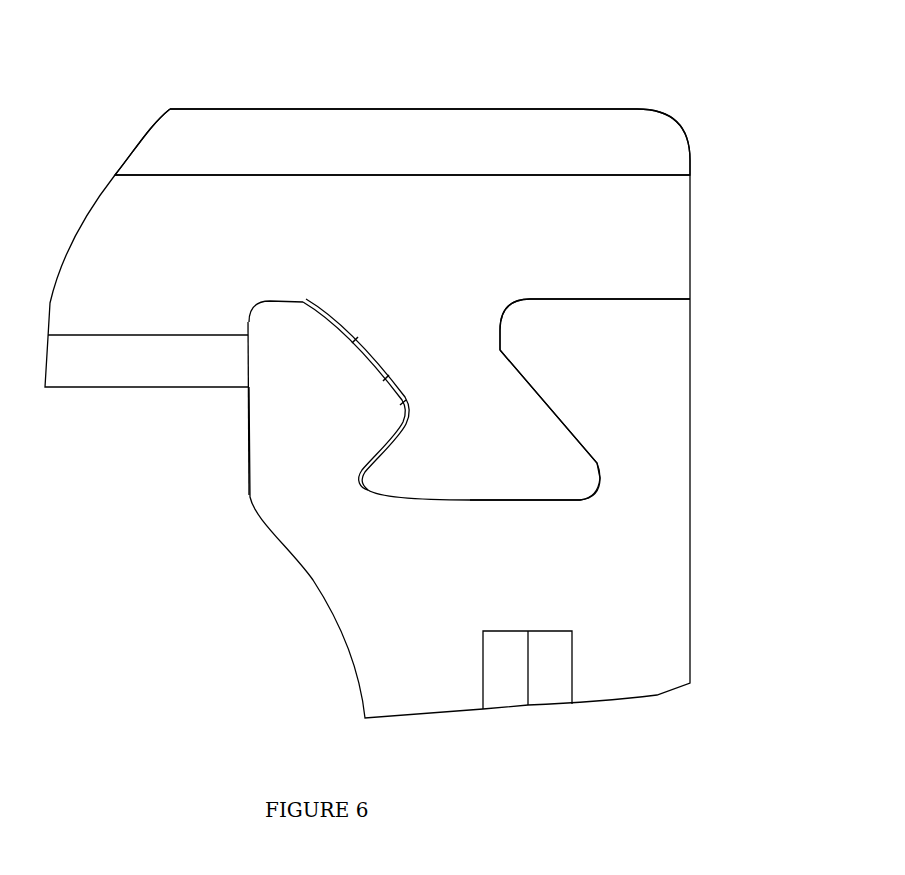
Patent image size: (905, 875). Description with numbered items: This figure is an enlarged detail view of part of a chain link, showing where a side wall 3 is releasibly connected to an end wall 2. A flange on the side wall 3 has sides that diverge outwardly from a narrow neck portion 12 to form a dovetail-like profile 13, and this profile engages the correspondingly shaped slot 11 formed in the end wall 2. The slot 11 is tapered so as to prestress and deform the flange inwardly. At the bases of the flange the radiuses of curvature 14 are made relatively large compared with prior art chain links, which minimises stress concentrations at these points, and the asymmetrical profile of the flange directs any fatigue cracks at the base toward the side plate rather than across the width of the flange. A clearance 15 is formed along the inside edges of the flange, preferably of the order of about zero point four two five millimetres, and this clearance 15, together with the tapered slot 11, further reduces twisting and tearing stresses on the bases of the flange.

The end wall 2 is at (690, 573).
The side wall 3 is at (368, 207).
The slot 11 is at (437, 505).
The neck portion 12 is at (450, 363).
The dovetail-like profile 13 is at (498, 457).
The radius of curvature 14 is at (293, 300).
The clearance 15 is at (387, 377).